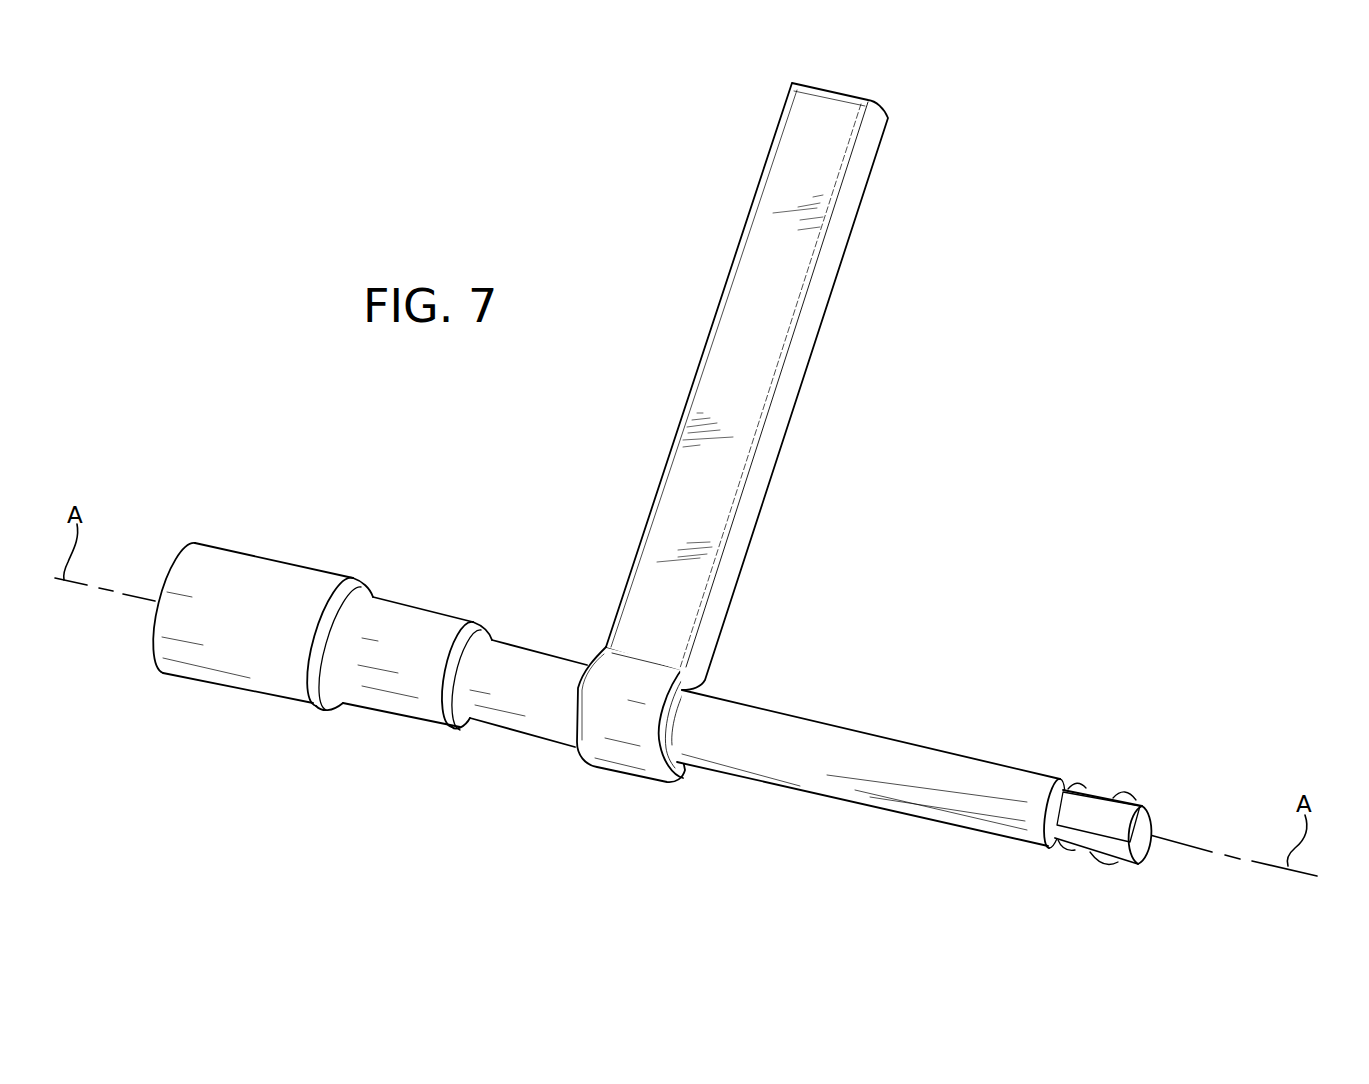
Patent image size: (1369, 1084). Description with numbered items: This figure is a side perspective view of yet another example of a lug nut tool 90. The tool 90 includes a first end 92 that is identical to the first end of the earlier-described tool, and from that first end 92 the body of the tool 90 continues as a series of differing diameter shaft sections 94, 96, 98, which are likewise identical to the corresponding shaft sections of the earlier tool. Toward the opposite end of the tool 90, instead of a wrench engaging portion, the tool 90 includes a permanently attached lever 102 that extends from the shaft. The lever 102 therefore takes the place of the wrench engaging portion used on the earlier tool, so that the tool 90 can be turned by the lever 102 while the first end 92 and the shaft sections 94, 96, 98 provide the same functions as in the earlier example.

The tool 90 is at (851, 834).
The first end 92 is at (1076, 886).
The shaft section 94 is at (538, 796).
The shaft section 96 is at (425, 772).
The shaft section 98 is at (305, 740).
The permanently attached lever 102 is at (737, 372).